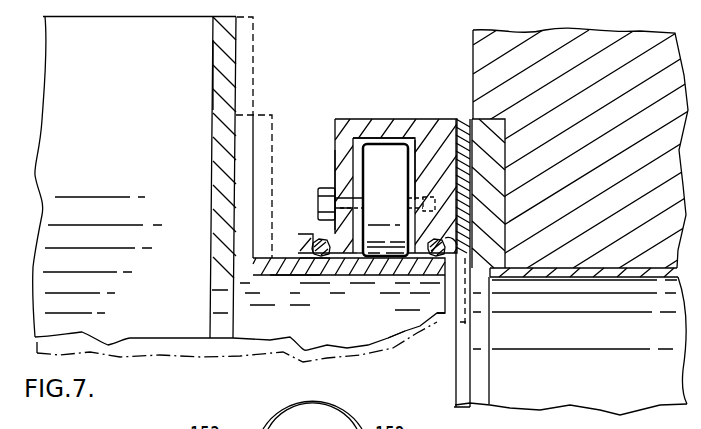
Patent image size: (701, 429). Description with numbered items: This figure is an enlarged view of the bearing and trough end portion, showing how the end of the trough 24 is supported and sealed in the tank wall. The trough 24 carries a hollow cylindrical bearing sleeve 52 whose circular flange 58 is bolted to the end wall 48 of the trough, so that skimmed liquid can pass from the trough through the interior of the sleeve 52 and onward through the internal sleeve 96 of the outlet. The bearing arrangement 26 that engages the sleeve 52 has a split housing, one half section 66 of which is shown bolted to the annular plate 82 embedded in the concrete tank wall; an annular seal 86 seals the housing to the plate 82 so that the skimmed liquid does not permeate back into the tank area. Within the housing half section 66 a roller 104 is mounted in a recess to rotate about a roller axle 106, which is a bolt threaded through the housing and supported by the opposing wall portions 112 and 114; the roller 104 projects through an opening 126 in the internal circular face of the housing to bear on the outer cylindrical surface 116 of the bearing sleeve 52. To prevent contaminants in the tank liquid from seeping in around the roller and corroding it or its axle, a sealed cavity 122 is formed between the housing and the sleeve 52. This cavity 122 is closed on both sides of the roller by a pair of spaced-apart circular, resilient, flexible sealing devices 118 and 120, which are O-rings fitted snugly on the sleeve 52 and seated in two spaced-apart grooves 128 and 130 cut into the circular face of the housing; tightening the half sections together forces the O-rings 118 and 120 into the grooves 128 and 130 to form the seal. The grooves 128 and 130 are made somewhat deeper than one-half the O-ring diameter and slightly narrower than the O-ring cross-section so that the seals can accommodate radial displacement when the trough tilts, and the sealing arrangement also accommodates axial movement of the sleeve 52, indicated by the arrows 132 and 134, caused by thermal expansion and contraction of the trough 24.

The trough 24 is at (153, 48).
The bearing arrangement 26 is at (347, 117).
The end wall of the trough 48 is at (216, 72).
The cylindrical bearing sleeve 52 is at (343, 268).
The circular flange 58 is at (243, 180).
The housing half section 66 is at (383, 117).
The annular plate 82 is at (495, 203).
The annular seal 86 is at (472, 183).
The internal sleeve 96 is at (598, 268).
The roller 104 is at (378, 168).
The roller axle 106 is at (424, 196).
The wall portion 112 is at (340, 163).
The wall portion 114 is at (423, 143).
The outer cylindrical surface 116 is at (311, 272).
The sealing device 118 is at (465, 302).
The sealing device 120 is at (314, 262).
The cavity 122 is at (358, 242).
The opening 126 is at (405, 258).
The groove 128 is at (467, 237).
The groove 130 is at (315, 242).
The arrow 132 is at (440, 312).
The arrow 134 is at (236, 60).